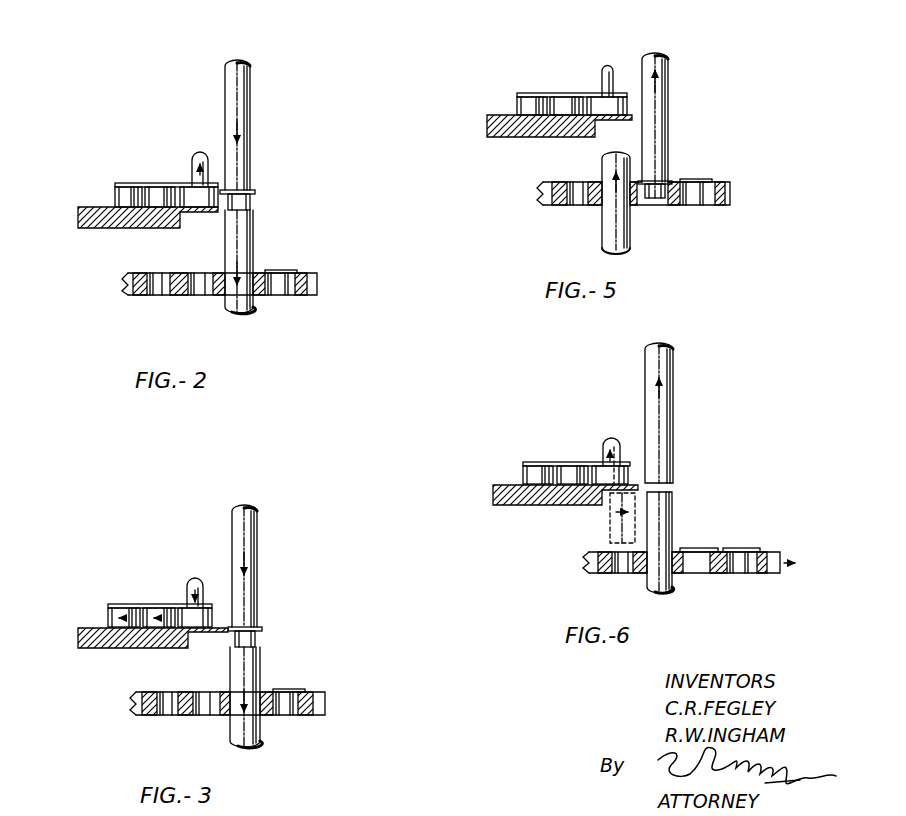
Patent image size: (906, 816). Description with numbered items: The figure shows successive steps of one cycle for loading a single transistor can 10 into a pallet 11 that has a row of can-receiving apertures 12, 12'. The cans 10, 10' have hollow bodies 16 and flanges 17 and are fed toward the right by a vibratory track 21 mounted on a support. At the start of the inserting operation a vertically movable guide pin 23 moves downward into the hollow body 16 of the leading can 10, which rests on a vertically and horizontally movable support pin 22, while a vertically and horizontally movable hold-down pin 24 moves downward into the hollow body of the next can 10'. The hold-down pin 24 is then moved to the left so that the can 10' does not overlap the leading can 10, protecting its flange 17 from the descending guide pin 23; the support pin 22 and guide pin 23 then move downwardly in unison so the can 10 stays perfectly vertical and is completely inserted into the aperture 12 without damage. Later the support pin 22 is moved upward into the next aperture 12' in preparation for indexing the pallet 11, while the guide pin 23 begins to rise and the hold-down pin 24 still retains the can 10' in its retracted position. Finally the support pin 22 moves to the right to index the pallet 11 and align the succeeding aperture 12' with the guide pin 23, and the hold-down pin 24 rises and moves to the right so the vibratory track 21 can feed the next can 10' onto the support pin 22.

In FIG. 2, the can 10 is at (196, 185).
In FIG. 3, the can 10 is at (199, 614).
In FIG. 5, the can 10 is at (600, 147).
In FIG. 6, the can 10 is at (613, 492).
In FIG. 2, the next can 10' is at (190, 175).
In FIG. 3, the next can 10' is at (189, 598).
In FIG. 5, the next can 10' is at (602, 89).
In FIG. 6, the next can 10' is at (605, 459).
In FIG. 2, the pallet 11 is at (140, 296).
In FIG. 3, the pallet 11 is at (148, 716).
In FIG. 5, the pallet 11 is at (558, 206).
In FIG. 6, the pallet 11 is at (605, 574).
In FIG. 2, the can-receiving aperture 12 is at (238, 298).
In FIG. 3, the can-receiving aperture 12 is at (242, 724).
In FIG. 5, the can-receiving aperture 12 is at (655, 207).
In FIG. 6, the can-receiving aperture 12 is at (699, 576).
In FIG. 2, the next aperture 12' is at (187, 297).
In FIG. 3, the next aperture 12' is at (194, 715).
In FIG. 5, the next aperture 12' is at (594, 204).
In FIG. 6, the next aperture 12' is at (633, 575).
In FIG. 2, the hollow body 16 is at (121, 198).
In FIG. 3, the hollow body 16 is at (113, 619).
In FIG. 5, the hollow body 16 is at (523, 110).
In FIG. 6, the hollow body 16 is at (524, 476).
In FIG. 2, the flange 17 is at (118, 184).
In FIG. 3, the flange 17 is at (110, 605).
In FIG. 5, the flange 17 is at (517, 94).
In FIG. 6, the flange 17 is at (523, 464).
In FIG. 2, the vibratory track 21 is at (112, 228).
In FIG. 3, the vibratory track 21 is at (112, 648).
In FIG. 5, the vibratory track 21 is at (515, 134).
In FIG. 6, the vibratory track 21 is at (545, 506).
In FIG. 2, the support pin 22 is at (253, 258).
In FIG. 3, the support pin 22 is at (259, 725).
In FIG. 5, the support pin 22 is at (612, 166).
In FIG. 6, the support pin 22 is at (673, 508).
In FIG. 2, the guide pin 23 is at (250, 161).
In FIG. 3, the guide pin 23 is at (250, 591).
In FIG. 5, the guide pin 23 is at (668, 143).
In FIG. 6, the guide pin 23 is at (663, 399).
In FIG. 2, the hold-down pin 24 is at (204, 157).
In FIG. 3, the hold-down pin 24 is at (195, 578).
In FIG. 5, the hold-down pin 24 is at (607, 65).
In FIG. 6, the hold-down pin 24 is at (613, 438).